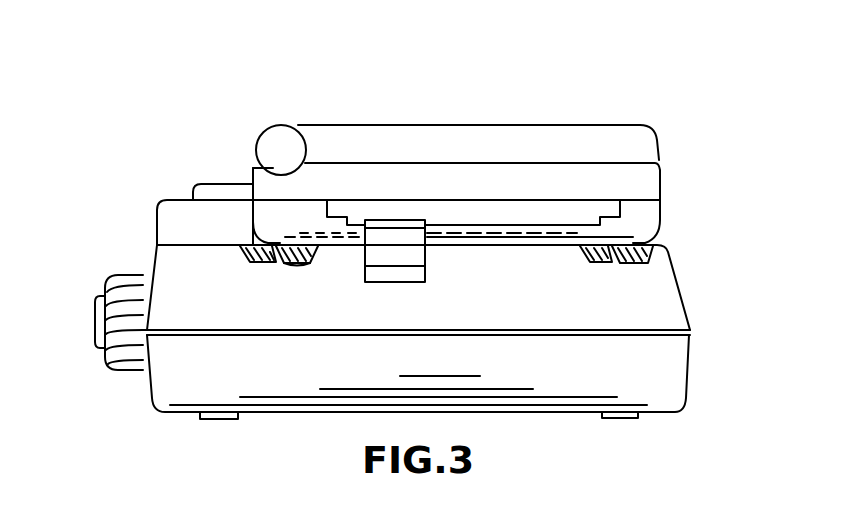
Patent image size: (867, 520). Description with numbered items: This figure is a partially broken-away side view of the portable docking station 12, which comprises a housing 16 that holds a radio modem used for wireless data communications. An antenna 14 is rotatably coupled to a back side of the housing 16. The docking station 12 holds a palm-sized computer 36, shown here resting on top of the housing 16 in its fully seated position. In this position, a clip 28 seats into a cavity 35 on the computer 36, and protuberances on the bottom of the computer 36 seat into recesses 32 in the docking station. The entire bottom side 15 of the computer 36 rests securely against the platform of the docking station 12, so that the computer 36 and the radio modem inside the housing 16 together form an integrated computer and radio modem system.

The portable docking station 12 is at (684, 104).
The antenna 14 is at (97, 303).
The bottom side 15 is at (533, 247).
The housing 16 is at (690, 350).
The clip 28 is at (403, 242).
The recesses 32 is at (297, 262).
The cavity 35 is at (498, 215).
The palm-sized computer 36 is at (593, 137).